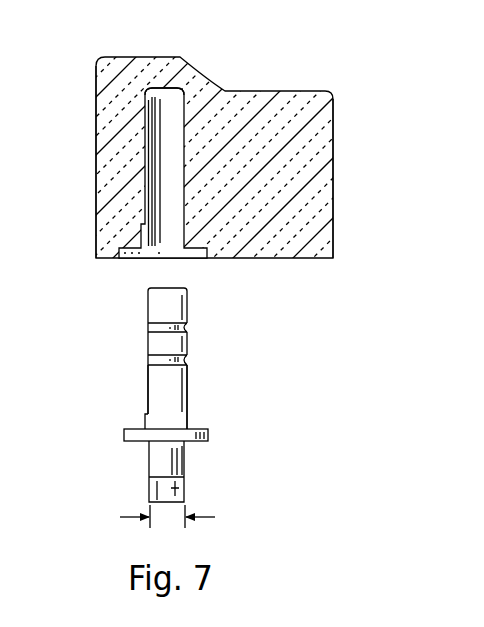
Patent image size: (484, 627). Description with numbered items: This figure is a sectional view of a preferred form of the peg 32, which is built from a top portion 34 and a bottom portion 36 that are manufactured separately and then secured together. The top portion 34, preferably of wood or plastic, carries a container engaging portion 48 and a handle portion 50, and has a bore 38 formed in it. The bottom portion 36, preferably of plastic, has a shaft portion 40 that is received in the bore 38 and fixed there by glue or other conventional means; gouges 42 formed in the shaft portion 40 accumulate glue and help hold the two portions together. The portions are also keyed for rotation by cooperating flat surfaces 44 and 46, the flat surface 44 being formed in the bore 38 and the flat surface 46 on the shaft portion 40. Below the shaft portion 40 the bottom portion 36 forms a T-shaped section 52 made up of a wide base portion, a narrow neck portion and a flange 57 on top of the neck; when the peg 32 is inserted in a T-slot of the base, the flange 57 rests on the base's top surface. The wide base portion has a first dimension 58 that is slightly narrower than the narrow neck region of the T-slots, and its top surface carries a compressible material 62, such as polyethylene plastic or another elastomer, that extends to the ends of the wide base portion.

The peg 32 is at (125, 281).
The top portion 34 is at (197, 68).
The bottom portion 36 is at (191, 377).
The bore 38 is at (172, 91).
The shaft portion 40 is at (178, 396).
The gouges 42 is at (183, 330).
The flat surface 44 is at (153, 138).
The flat surface 46 is at (145, 344).
The container engaging portion 48 is at (95, 105).
The handle portion 50 is at (334, 153).
The T-shaped section 52 is at (136, 452).
The flange 57 is at (209, 434).
The first dimension 58 is at (133, 517).
The compressible material 62 is at (175, 490).